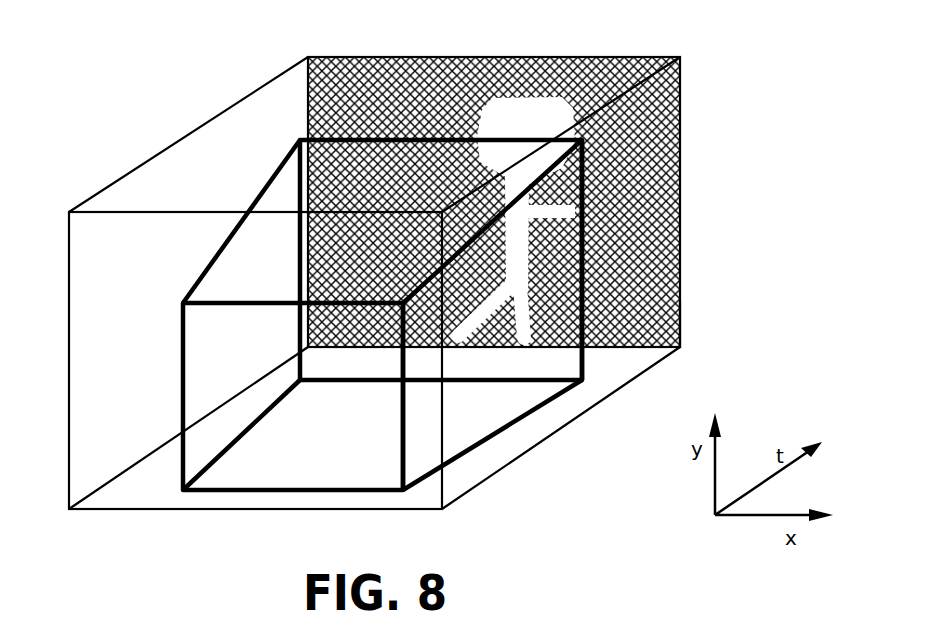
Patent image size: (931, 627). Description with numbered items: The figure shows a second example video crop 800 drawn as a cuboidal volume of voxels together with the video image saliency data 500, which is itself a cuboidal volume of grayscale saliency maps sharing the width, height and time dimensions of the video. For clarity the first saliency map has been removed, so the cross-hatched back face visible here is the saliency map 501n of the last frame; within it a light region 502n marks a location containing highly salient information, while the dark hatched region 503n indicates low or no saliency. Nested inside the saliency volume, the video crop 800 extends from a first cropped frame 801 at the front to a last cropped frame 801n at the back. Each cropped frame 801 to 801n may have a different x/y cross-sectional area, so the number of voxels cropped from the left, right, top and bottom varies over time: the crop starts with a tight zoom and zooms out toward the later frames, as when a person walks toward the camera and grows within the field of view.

The video image saliency data 500 is at (236, 103).
The video crop 800 is at (252, 203).
The region 502n is at (522, 130).
The saliency map 501n is at (682, 200).
The region 503n is at (660, 327).
The cropped frame 801n is at (586, 350).
The cropped frame 801 is at (402, 443).